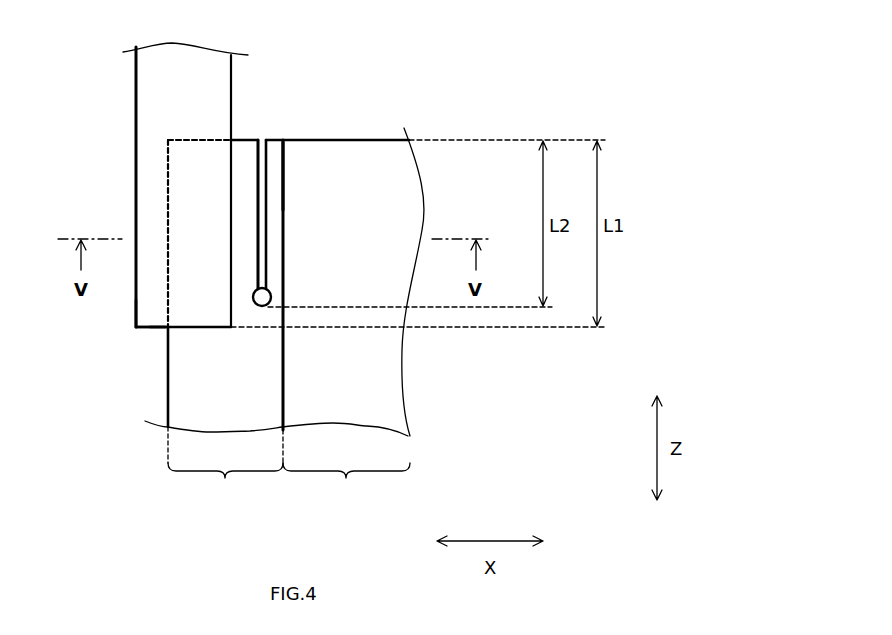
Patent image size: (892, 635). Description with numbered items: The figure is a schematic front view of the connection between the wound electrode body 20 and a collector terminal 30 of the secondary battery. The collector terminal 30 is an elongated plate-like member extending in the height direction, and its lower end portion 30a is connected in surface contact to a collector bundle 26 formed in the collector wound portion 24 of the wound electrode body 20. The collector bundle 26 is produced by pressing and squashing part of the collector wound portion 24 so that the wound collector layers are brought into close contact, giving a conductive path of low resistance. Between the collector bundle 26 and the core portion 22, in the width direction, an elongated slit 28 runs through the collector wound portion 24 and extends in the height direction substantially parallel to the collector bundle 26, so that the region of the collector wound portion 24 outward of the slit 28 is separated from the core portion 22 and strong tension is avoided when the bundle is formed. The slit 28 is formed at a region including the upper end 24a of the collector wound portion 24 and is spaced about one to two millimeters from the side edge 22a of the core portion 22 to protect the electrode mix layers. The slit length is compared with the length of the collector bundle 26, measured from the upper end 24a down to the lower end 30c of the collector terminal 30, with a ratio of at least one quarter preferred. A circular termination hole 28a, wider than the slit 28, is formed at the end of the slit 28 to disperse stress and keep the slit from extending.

The wound electrode body 20 is at (378, 139).
The core portion 22 is at (338, 324).
The side edge of the core portion 22a is at (285, 207).
The collector wound portion 24 is at (225, 417).
The upper end of the collector wound portion 24a is at (192, 139).
The collector bundle 26 is at (241, 147).
The slit 28 is at (262, 170).
The termination hole 28a is at (262, 308).
The collector terminal 30 is at (152, 87).
The lower end portion of the collector terminal 30a is at (147, 311).
The lower end of the collector terminal 30c is at (152, 337).